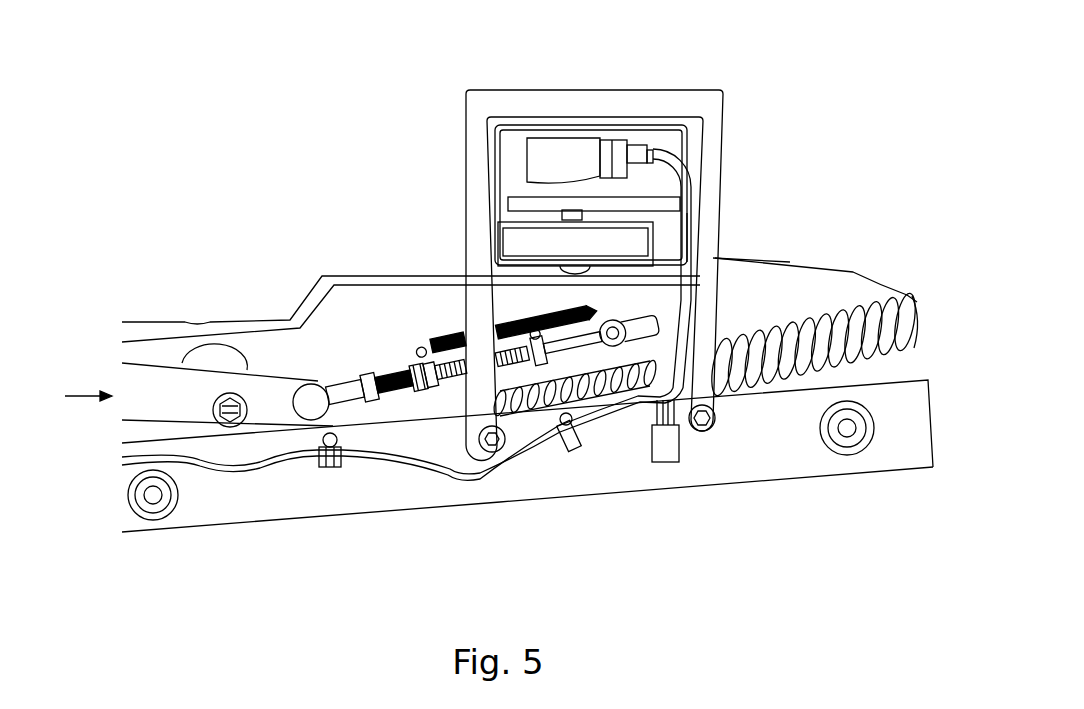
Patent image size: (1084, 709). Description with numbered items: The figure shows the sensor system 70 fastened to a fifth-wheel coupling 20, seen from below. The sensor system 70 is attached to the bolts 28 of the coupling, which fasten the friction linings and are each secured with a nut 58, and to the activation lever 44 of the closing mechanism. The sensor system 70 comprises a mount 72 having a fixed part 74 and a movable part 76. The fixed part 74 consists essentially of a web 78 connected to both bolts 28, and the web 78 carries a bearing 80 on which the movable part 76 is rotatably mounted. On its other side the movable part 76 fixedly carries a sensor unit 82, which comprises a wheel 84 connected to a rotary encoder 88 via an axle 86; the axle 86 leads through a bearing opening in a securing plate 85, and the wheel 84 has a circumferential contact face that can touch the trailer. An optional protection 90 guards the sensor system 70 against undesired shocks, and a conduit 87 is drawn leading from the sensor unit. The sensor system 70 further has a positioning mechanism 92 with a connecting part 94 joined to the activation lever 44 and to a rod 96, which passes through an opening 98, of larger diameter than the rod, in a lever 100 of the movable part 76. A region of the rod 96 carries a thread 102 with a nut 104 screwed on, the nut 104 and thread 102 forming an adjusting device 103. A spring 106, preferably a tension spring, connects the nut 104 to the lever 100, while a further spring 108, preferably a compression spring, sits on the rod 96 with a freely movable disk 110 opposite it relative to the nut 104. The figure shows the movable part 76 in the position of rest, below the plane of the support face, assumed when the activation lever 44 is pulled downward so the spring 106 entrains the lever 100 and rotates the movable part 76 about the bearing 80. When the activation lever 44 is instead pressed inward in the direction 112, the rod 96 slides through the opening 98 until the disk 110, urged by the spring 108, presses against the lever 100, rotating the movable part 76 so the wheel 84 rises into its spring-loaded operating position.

The fifth-wheel coupling 20 is at (855, 272).
The bolt 28 is at (153, 497).
The activation lever 44 is at (160, 382).
The nut 58 is at (173, 507).
The sensor system 70 is at (634, 243).
The mount 72 is at (625, 500).
The fixed part 74 is at (718, 455).
The movable part 76 is at (717, 328).
The web 78 is at (307, 490).
The bearing 80 is at (664, 464).
The sensor unit 82 is at (508, 158).
The wheel 84 is at (505, 243).
The securing plate 85 is at (687, 230).
The axle 86 is at (577, 210).
The cable conduit 87 is at (640, 175).
The rotary encoder 88 is at (557, 148).
The protection 90 is at (507, 98).
The positioning mechanism 92 is at (478, 402).
The connecting part 94 is at (340, 387).
The rod 96 is at (573, 447).
The opening 98 is at (733, 260).
The lever 100 is at (725, 262).
The thread 102 is at (393, 393).
The adjusting device 103 is at (380, 358).
The nut 104 is at (420, 348).
The spring 106 is at (585, 316).
The further spring 108 is at (447, 382).
The disk 110 is at (540, 352).
The direction 112 is at (75, 395).